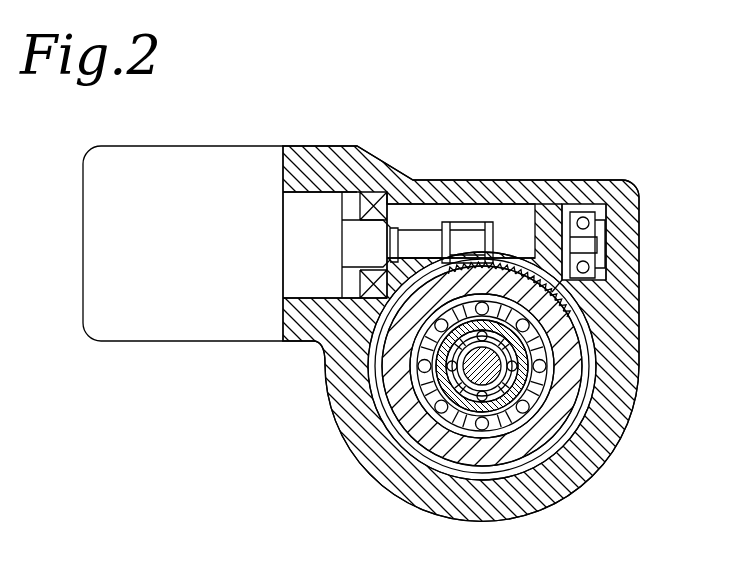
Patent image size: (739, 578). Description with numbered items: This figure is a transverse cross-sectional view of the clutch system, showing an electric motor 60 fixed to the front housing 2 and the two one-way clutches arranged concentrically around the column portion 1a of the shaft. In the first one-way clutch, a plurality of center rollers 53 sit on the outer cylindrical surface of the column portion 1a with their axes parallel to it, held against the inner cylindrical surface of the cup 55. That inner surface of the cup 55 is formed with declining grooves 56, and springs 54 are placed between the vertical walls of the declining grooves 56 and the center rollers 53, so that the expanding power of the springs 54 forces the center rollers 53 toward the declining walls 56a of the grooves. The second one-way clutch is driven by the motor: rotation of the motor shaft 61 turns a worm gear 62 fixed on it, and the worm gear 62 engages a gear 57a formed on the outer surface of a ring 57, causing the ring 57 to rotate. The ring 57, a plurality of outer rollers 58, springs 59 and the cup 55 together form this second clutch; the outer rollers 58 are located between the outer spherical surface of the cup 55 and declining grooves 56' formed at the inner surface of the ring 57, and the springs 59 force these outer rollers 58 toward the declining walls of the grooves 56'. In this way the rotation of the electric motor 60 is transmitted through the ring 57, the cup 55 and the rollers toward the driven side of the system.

The column portion 1a is at (465, 385).
The front housing 2 is at (567, 480).
The center rollers 53 is at (455, 410).
The springs 54 is at (523, 322).
The cup 55 is at (530, 317).
The declining grooves 56 is at (380, 357).
The declining grooves 56' is at (579, 362).
The declining walls 56a is at (438, 405).
The ring 57 is at (533, 262).
The gear 57a is at (488, 262).
The outer rollers 58 is at (546, 366).
The springs 59 is at (530, 380).
The electric motor 60 is at (188, 163).
The motor shaft 61 is at (413, 247).
The worm gear 62 is at (462, 240).